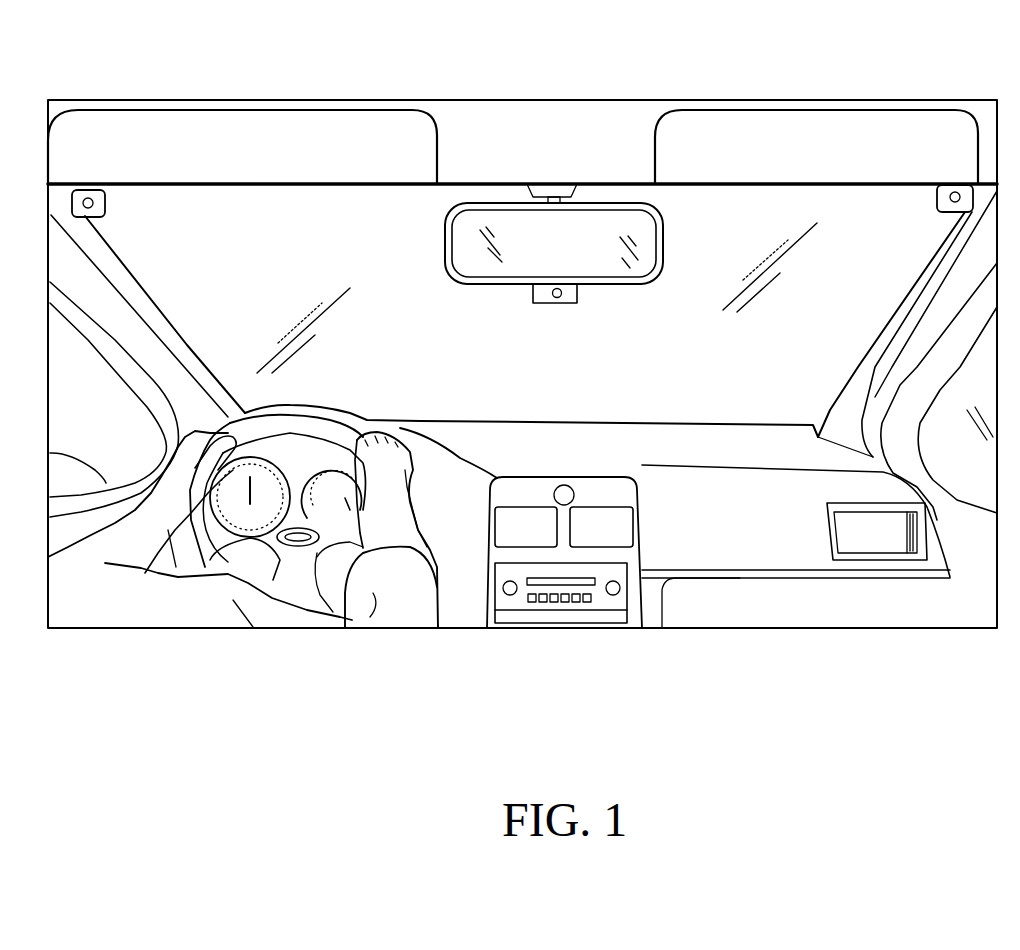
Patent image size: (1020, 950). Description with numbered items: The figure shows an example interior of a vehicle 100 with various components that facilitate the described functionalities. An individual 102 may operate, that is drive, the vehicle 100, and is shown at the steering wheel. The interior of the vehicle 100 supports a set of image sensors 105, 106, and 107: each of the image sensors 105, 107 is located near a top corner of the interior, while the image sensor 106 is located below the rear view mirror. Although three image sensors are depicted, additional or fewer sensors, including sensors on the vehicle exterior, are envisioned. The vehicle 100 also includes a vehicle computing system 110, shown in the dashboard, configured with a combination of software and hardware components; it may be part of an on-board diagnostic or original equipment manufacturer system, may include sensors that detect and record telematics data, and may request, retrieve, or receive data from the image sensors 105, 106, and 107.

The vehicle 100 is at (611, 68).
The individual 102 is at (122, 610).
The image sensor 105 is at (107, 200).
The image sensor 106 is at (560, 303).
The image sensor 107 is at (937, 199).
The vehicle computing system 110 is at (603, 490).